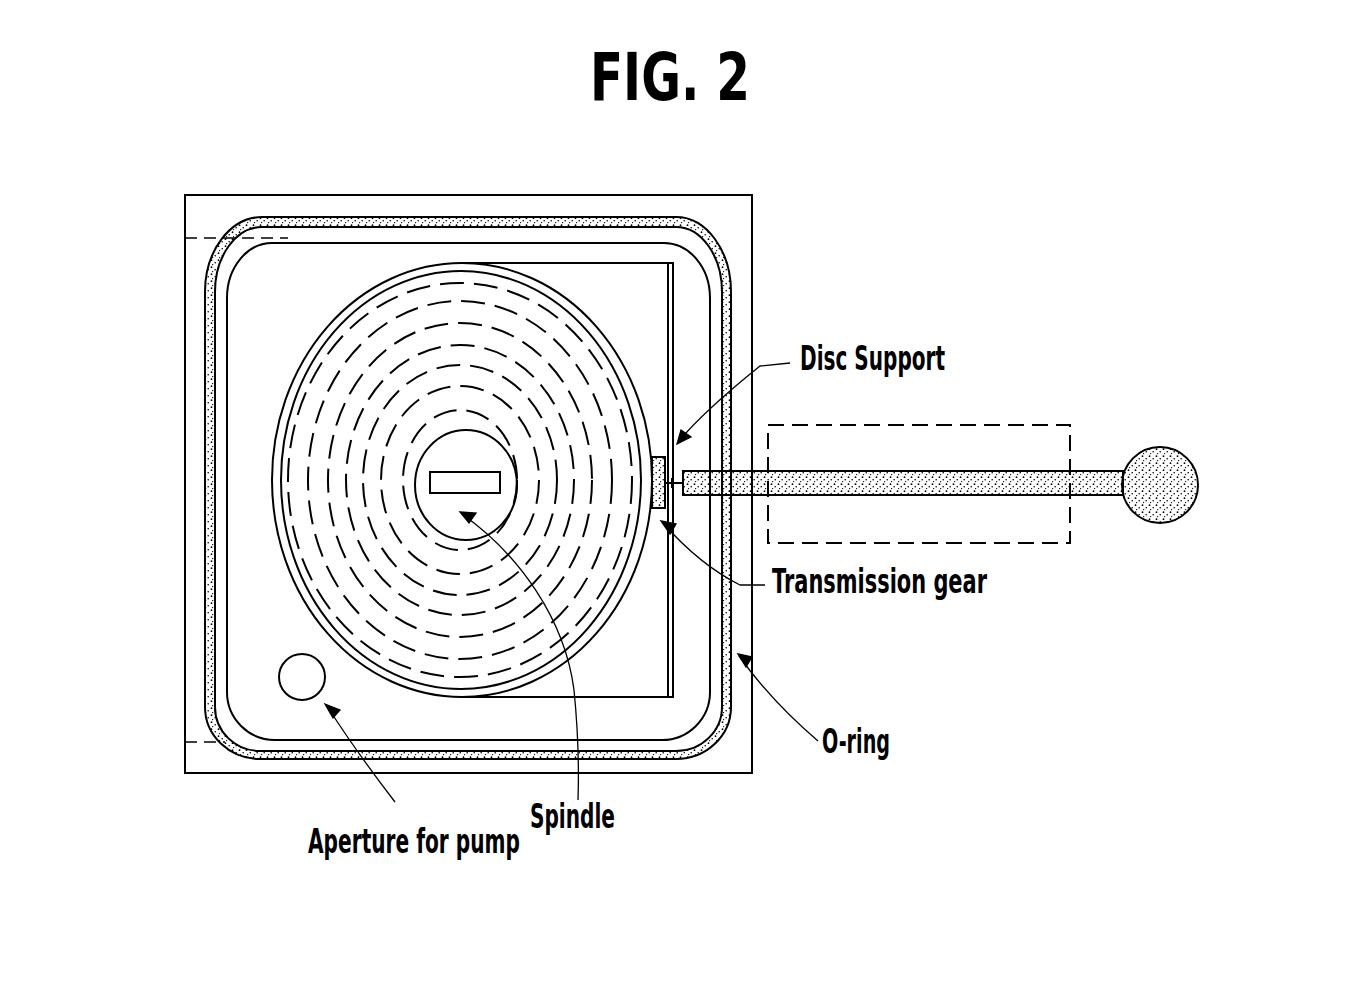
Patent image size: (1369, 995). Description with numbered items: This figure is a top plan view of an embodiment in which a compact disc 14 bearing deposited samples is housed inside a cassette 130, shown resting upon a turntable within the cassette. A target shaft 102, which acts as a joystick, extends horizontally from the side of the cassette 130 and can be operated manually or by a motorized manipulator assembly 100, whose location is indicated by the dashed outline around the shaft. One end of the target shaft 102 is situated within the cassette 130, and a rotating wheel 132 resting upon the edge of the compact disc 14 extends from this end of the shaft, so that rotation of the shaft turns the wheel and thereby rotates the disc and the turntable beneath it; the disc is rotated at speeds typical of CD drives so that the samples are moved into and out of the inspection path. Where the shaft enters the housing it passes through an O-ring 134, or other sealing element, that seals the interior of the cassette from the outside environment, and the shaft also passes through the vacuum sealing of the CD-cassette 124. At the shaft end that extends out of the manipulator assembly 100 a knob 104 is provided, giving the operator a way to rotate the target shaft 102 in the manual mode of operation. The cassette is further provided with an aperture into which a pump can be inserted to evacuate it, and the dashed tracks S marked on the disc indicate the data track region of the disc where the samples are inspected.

The CD-cassette 124 is at (755, 228).
The O-ring 134 is at (706, 760).
The compact disc 14 is at (462, 409).
The data tracks / spiral S is at (564, 353).
The rotating wheel 132 is at (663, 456).
The cassette 130 is at (986, 475).
The target shaft 102 is at (1088, 497).
The motorized manipulator assembly 100 is at (1072, 438).
The knob 104 is at (1196, 510).